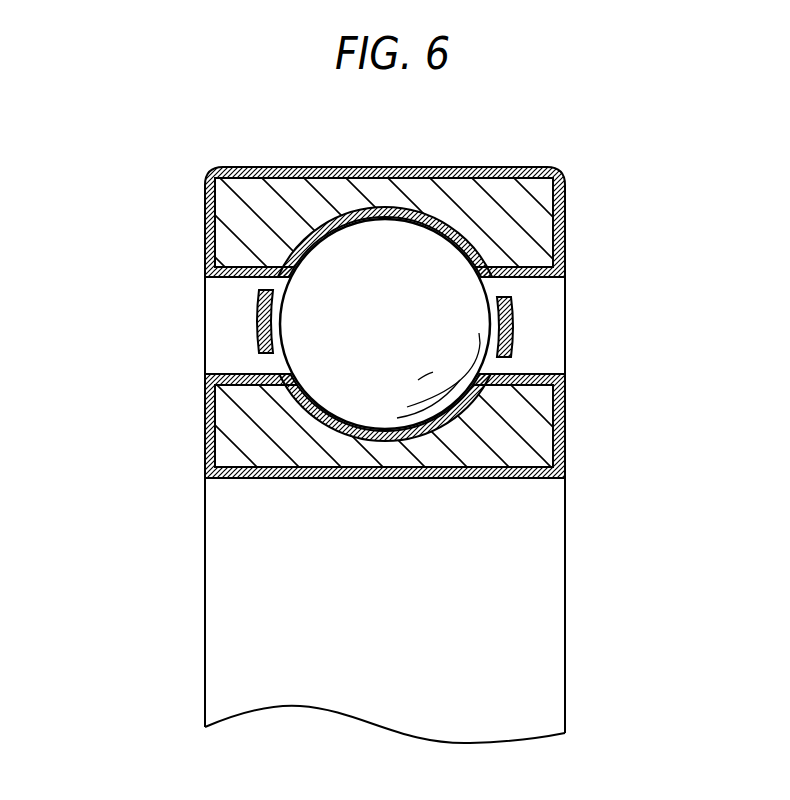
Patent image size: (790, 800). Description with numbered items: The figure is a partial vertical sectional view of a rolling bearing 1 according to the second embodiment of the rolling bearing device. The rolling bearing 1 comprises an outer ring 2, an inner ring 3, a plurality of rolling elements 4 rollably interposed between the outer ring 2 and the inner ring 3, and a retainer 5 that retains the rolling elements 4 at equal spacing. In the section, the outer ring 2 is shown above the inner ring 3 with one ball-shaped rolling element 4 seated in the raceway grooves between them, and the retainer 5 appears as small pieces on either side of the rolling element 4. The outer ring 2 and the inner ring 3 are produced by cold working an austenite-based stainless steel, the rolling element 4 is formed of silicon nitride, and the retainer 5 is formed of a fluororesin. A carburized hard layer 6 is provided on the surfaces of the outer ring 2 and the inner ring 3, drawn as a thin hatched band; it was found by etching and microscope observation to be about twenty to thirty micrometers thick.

The rolling bearing 1 is at (361, 425).
The outer ring 2 is at (210, 212).
The inner ring 3 is at (210, 414).
The rolling element 4 is at (470, 380).
The retainer 5 is at (512, 322).
The carburized hard layer 6 is at (479, 169).